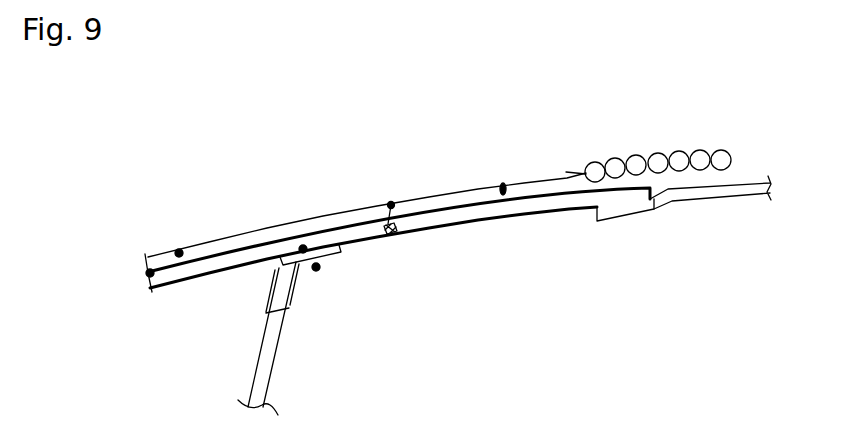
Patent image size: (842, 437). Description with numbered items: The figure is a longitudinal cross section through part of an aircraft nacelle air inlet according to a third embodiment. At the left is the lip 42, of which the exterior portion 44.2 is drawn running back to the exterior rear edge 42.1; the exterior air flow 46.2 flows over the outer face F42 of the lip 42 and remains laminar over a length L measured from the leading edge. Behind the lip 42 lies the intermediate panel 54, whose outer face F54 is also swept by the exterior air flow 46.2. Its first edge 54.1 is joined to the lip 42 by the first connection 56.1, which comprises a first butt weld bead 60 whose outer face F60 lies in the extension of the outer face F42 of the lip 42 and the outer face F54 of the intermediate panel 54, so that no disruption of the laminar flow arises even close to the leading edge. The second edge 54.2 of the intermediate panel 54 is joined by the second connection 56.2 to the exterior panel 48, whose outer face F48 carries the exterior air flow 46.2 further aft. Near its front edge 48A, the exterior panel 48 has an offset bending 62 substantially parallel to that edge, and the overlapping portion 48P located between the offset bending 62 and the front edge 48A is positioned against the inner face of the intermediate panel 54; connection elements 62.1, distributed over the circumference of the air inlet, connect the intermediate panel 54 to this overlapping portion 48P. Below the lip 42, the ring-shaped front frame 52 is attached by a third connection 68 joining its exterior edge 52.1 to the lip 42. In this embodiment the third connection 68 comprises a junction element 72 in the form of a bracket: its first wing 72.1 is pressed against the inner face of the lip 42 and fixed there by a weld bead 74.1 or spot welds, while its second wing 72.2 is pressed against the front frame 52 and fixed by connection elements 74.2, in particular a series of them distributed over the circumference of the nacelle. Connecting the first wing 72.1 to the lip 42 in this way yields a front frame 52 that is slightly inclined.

The lip 42 is at (188, 262).
The outer face of the lip F42 is at (224, 250).
The exterior air flow 46.2 is at (250, 235).
The weld bead 74.1 is at (316, 266).
The exterior rear edge of the lip 42.1 is at (352, 236).
The outer face of the first butt weld bead F60 is at (383, 222).
The first butt weld bead 60 is at (390, 204).
The first edge of the intermediate panel 54.1 is at (412, 205).
The outer face of the intermediate panel F54 is at (460, 198).
The intermediate panel 54 is at (503, 185).
The length L is at (575, 177).
The connection elements 62.1 is at (617, 170).
The second edge of the intermediate panel 54.2 is at (650, 168).
The outer face of the exterior panel F48 is at (705, 151).
The exterior panel 48 is at (740, 171).
The offset bending 62 is at (683, 215).
The overlapping portion 48P is at (656, 210).
The front edge of the exterior panel 48A is at (603, 221).
The second connection 56.2 is at (642, 237).
The first connection 56.1 is at (406, 241).
The first wing 72.1 is at (313, 270).
The junction element 72 is at (292, 280).
The exterior edge of the front frame 52.1 is at (292, 290).
The front frame 52 is at (282, 371).
The second wing 72.2 is at (265, 307).
The third connection 68 is at (243, 310).
The connection elements 74.2 is at (260, 280).
The exterior portion of the lip 44.2 is at (145, 269).